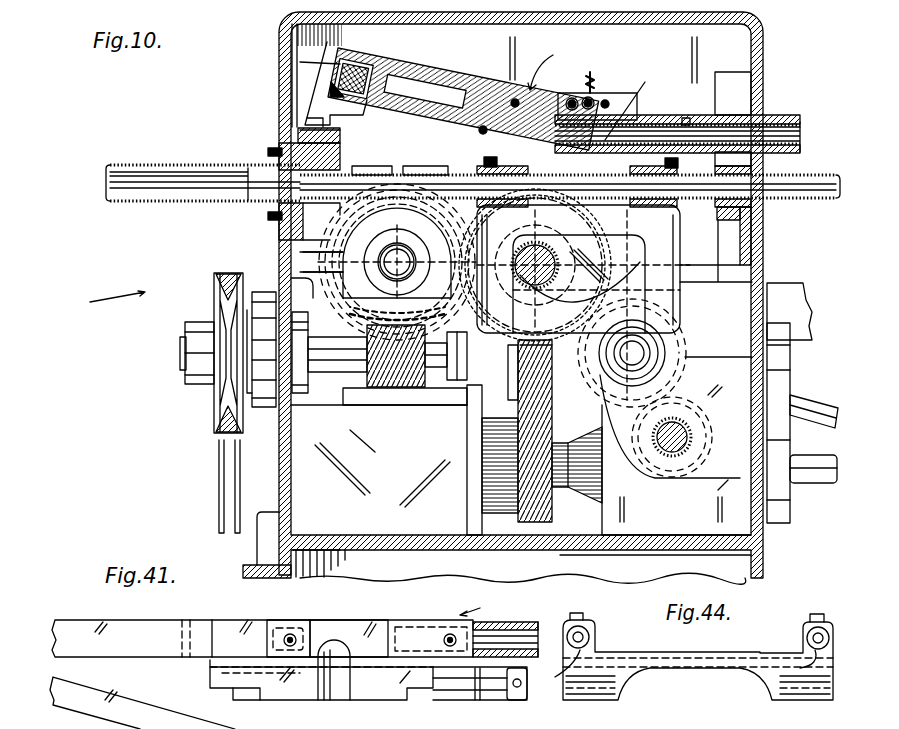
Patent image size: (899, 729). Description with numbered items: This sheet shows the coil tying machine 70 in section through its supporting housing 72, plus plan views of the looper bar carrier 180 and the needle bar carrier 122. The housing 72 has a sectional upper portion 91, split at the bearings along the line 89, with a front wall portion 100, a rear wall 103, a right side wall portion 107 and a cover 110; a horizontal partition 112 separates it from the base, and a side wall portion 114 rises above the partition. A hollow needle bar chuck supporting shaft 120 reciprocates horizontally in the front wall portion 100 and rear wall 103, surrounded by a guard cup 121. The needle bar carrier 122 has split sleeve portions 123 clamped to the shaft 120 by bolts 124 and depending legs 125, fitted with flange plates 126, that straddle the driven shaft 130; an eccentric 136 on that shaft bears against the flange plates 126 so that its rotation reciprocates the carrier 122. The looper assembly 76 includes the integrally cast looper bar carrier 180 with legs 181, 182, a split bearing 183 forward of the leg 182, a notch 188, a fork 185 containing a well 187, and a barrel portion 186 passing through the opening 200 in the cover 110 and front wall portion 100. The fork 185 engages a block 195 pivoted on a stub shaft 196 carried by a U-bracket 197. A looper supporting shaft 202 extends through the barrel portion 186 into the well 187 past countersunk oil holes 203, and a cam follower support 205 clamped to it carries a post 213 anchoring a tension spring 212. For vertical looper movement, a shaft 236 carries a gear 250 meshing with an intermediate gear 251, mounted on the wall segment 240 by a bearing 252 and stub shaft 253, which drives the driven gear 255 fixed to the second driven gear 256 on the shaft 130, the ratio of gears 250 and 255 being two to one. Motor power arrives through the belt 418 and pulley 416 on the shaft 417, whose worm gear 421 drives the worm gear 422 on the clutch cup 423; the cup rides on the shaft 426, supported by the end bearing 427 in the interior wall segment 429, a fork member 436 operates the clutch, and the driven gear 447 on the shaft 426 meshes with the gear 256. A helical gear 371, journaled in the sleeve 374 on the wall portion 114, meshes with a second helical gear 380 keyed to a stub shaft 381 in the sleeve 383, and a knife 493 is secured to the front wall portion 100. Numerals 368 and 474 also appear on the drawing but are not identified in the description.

In FIG. 10, the drive assembly 70 is at (107, 301).
In FIG. 10, the base 72 is at (244, 549).
In FIG. 10, the bracket 76 is at (549, 64).
In FIG. 10, the housing wall 89 is at (760, 262).
In FIG. 10, the foot 91 is at (270, 559).
In FIG. 10, the housing 100 is at (768, 240).
In FIG. 10, the bushing 103 is at (280, 446).
In FIG. 10, the housing bottom 107 is at (738, 522).
In FIG. 10, the cover 110 is at (279, 128).
In FIG. 10, the base plate 112 is at (548, 549).
In FIG. 10, the partition wall 114 is at (458, 398).
In FIG. 10, the shaft 120 is at (250, 192).
In FIG. 10, the tube 121 is at (132, 163).
In FIG. 10, the bearing bracket 122 is at (722, 150).
In FIG. 44, the bearing bracket 122 is at (760, 634).
In FIG. 10, the bearing 123 is at (477, 168).
In FIG. 44, the bearing 123 is at (592, 692).
In FIG. 10, the key 124 is at (493, 157).
In FIG. 10, the gear housing 125 is at (660, 290).
In FIG. 10, the center line 126 is at (682, 277).
In FIG. 44, the center line 126 is at (565, 680).
In FIG. 10, the shaft 130 is at (538, 243).
In FIG. 10, the carrier 136 is at (527, 355).
In FIG. 10, the arm 180 is at (419, 55).
In FIG. 41, the arm 180 is at (482, 604).
In FIG. 41, the bar 181 is at (257, 690).
In FIG. 41, the rail 182 is at (400, 673).
In FIG. 41, the clamp 183 is at (497, 692).
In FIG. 10, the bar 185 is at (437, 72).
In FIG. 41, the bar 185 is at (138, 657).
In FIG. 10, the shaft 186 is at (778, 125).
In FIG. 41, the shaft 186 is at (512, 625).
In FIG. 41, the block 187 is at (297, 620).
In FIG. 41, the slot 188 is at (335, 628).
In FIG. 10, the plate 195 is at (300, 68).
In FIG. 10, the plate 196 is at (330, 107).
In FIG. 10, the plate 197 is at (320, 88).
In FIG. 10, the strip 200 is at (780, 117).
In FIG. 10, the shaft 202 is at (795, 140).
In FIG. 10, the screw 203 is at (570, 99).
In FIG. 41, the screw 203 is at (284, 642).
In FIG. 10, the block 205 is at (618, 100).
In FIG. 10, the screw 212 is at (590, 70).
In FIG. 10, the screw 213 is at (603, 98).
In FIG. 10, the shaft 236 is at (665, 460).
In FIG. 10, the plate 240 is at (700, 476).
In FIG. 10, the gear 250 is at (680, 478).
In FIG. 10, the bearing 251 is at (668, 370).
In FIG. 10, the shaft 252 is at (650, 352).
In FIG. 10, the gear 253 is at (642, 332).
In FIG. 10, the gear 255 is at (670, 248).
In FIG. 10, the gear 256 is at (598, 222).
In FIG. 10, the shaft 368 is at (805, 487).
In FIG. 10, the base 371 is at (530, 526).
In FIG. 10, the gear 374 is at (490, 487).
In FIG. 10, the bevel gear 380 is at (548, 405).
In FIG. 10, the collar 381 is at (515, 388).
In FIG. 10, the bevel pinion 383 is at (595, 440).
In FIG. 10, the pulley 416 is at (215, 413).
In FIG. 10, the shaft 417 is at (183, 357).
In FIG. 10, the belt 418 is at (222, 470).
In FIG. 10, the shaft 421 is at (378, 392).
In FIG. 10, the worm 422 is at (365, 325).
In FIG. 10, the worm gear 423 is at (395, 245).
In FIG. 10, the bearing 426 is at (279, 255).
In FIG. 10, the bearing 427 is at (280, 272).
In FIG. 10, the bearing block 429 is at (340, 292).
In FIG. 10, the spacer 436 is at (422, 166).
In FIG. 10, the seal 447 is at (279, 237).
In FIG. 10, the shaft 474 is at (812, 400).
In FIG. 10, the bracket 493 is at (795, 300).